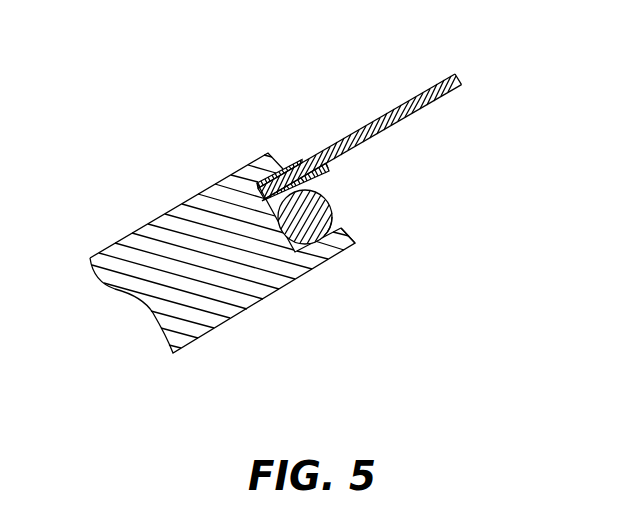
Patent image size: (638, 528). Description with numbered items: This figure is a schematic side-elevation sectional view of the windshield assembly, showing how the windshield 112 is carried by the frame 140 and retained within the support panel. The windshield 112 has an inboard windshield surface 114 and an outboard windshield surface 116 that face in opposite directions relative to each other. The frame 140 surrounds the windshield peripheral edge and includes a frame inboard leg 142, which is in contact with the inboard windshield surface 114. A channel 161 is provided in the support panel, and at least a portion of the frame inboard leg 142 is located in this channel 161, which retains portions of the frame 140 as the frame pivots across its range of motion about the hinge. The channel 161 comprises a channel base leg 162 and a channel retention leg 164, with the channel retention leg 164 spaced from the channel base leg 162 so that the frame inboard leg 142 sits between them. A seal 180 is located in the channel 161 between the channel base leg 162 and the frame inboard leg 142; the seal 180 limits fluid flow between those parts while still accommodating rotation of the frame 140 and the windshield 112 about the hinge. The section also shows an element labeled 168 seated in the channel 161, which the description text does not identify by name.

The windshield 112 is at (370, 122).
The inboard windshield surface 114 is at (382, 142).
The outboard windshield surface 116 is at (465, 123).
The frame 140 is at (246, 206).
The frame inboard leg 142 is at (262, 208).
The channel 161 is at (341, 228).
The channel base leg 162 is at (318, 266).
The channel retention leg 164 is at (256, 180).
The rod 168 is at (336, 195).
The seal 180 is at (325, 238).